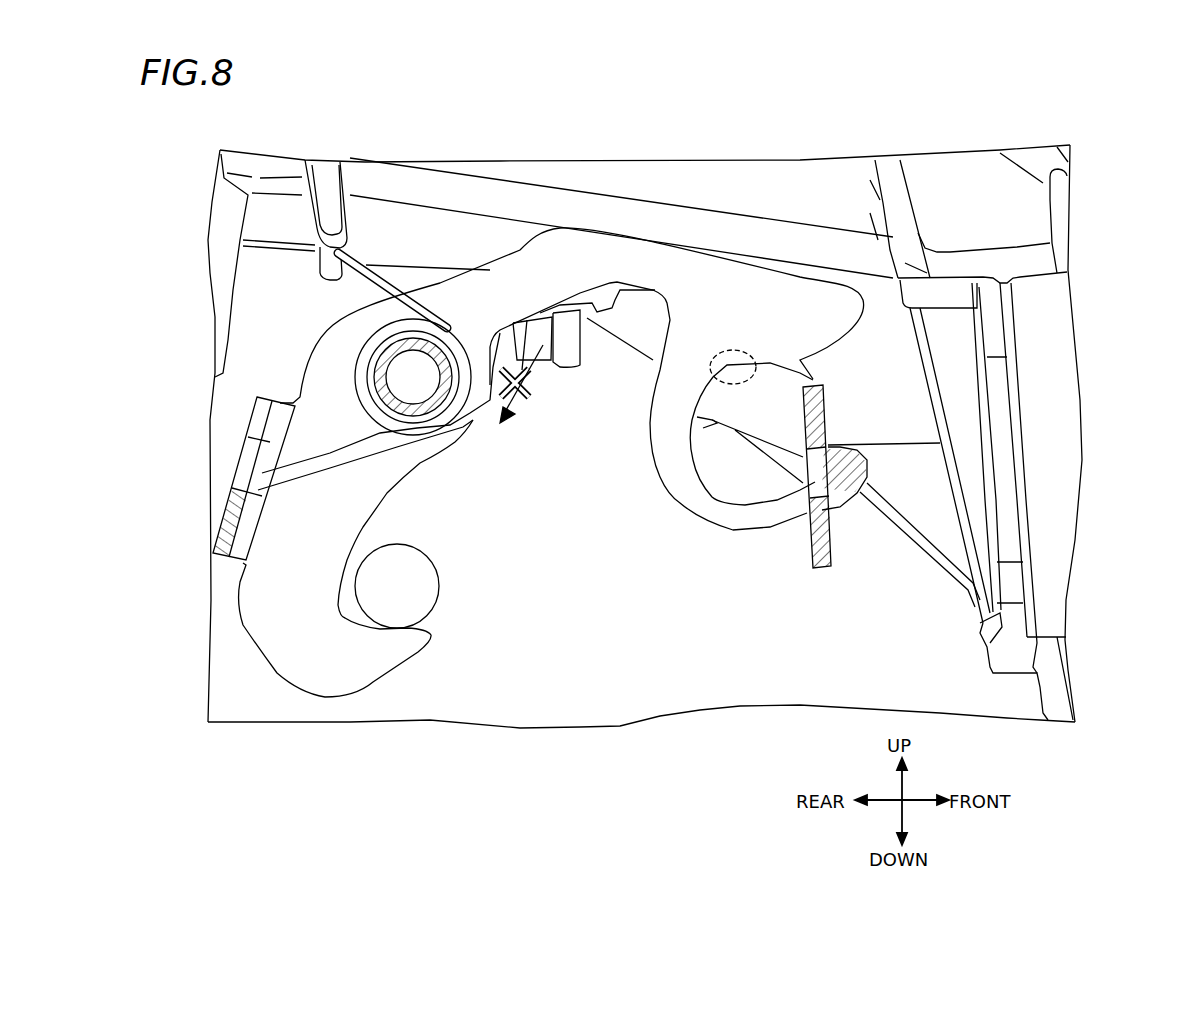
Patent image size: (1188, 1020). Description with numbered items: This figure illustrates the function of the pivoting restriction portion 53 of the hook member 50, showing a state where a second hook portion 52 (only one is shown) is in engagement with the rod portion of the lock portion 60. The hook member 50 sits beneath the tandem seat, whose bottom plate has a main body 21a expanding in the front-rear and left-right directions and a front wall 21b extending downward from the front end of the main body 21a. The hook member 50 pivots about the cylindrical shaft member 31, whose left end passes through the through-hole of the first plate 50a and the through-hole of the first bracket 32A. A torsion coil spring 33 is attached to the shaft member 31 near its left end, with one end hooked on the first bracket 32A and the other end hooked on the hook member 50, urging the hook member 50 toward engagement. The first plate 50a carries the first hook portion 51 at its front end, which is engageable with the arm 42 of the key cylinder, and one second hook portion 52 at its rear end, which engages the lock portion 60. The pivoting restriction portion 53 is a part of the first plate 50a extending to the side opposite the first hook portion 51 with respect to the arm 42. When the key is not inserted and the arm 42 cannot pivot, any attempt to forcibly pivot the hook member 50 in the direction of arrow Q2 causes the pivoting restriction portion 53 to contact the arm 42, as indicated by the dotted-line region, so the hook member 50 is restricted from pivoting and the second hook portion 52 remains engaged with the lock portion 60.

The main body 21a is at (440, 185).
The front wall 21b is at (1010, 452).
The shaft member 31 is at (392, 347).
The first bracket 32A is at (370, 215).
The torsion coil spring 33 is at (450, 335).
The arm 42 is at (776, 410).
The hook member 50 is at (572, 310).
The first plate 50a is at (752, 427).
The first hook portion 51 is at (787, 500).
The second hook portion 52 is at (353, 660).
The pivoting restriction portion 53 is at (832, 318).
The lock portion 60 is at (412, 592).
The arrow Q2 is at (525, 387).